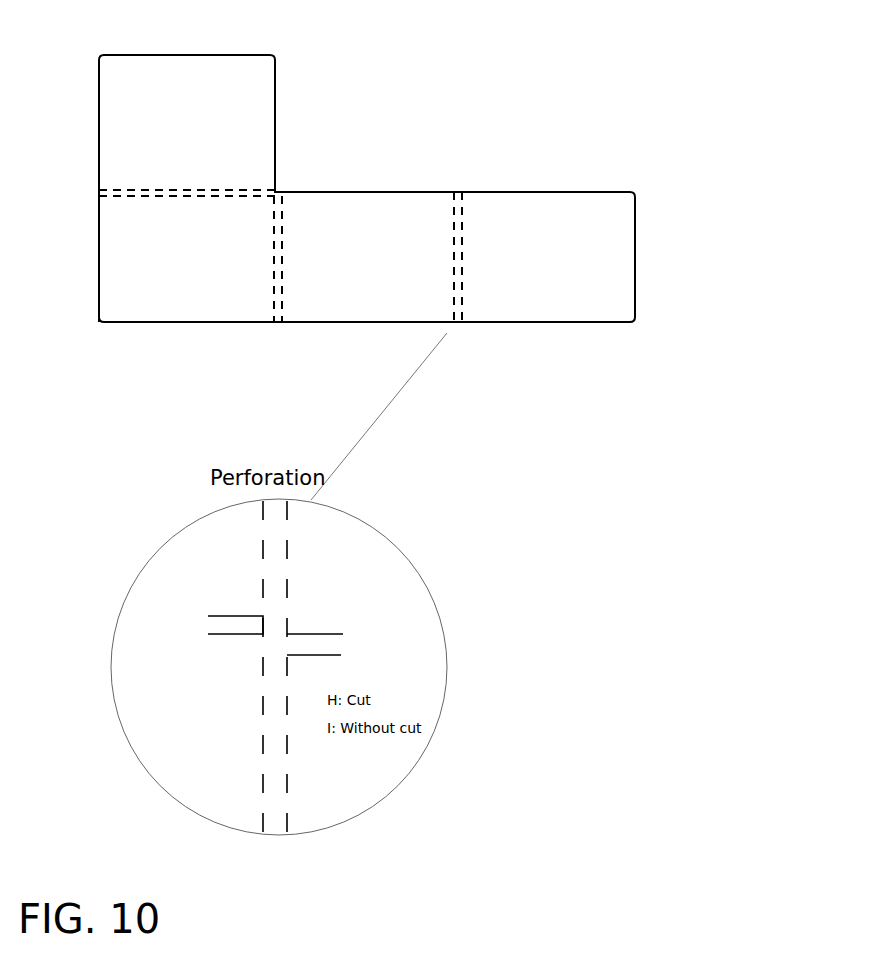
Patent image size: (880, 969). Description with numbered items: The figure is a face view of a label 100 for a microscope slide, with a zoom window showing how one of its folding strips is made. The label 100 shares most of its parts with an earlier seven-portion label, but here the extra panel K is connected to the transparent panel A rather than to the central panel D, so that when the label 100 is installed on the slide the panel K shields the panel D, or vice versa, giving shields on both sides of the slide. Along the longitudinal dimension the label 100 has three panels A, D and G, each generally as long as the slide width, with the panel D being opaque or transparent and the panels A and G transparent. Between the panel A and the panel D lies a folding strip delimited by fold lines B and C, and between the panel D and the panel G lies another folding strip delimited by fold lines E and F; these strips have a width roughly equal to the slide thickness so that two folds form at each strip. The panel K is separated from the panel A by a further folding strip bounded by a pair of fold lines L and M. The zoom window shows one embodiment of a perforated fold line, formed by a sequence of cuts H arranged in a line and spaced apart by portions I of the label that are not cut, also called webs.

The label 100 is at (690, 141).
The panel K is at (188, 75).
The fold line M is at (98, 188).
The fold line L is at (97, 200).
The panel A is at (189, 285).
The fold line B is at (273, 332).
The fold line C is at (282, 332).
The panel D is at (367, 285).
The fold line E is at (454, 332).
The fold line F is at (462, 332).
The panel G is at (545, 285).
The cut H is at (229, 625).
The portion I is at (317, 645).